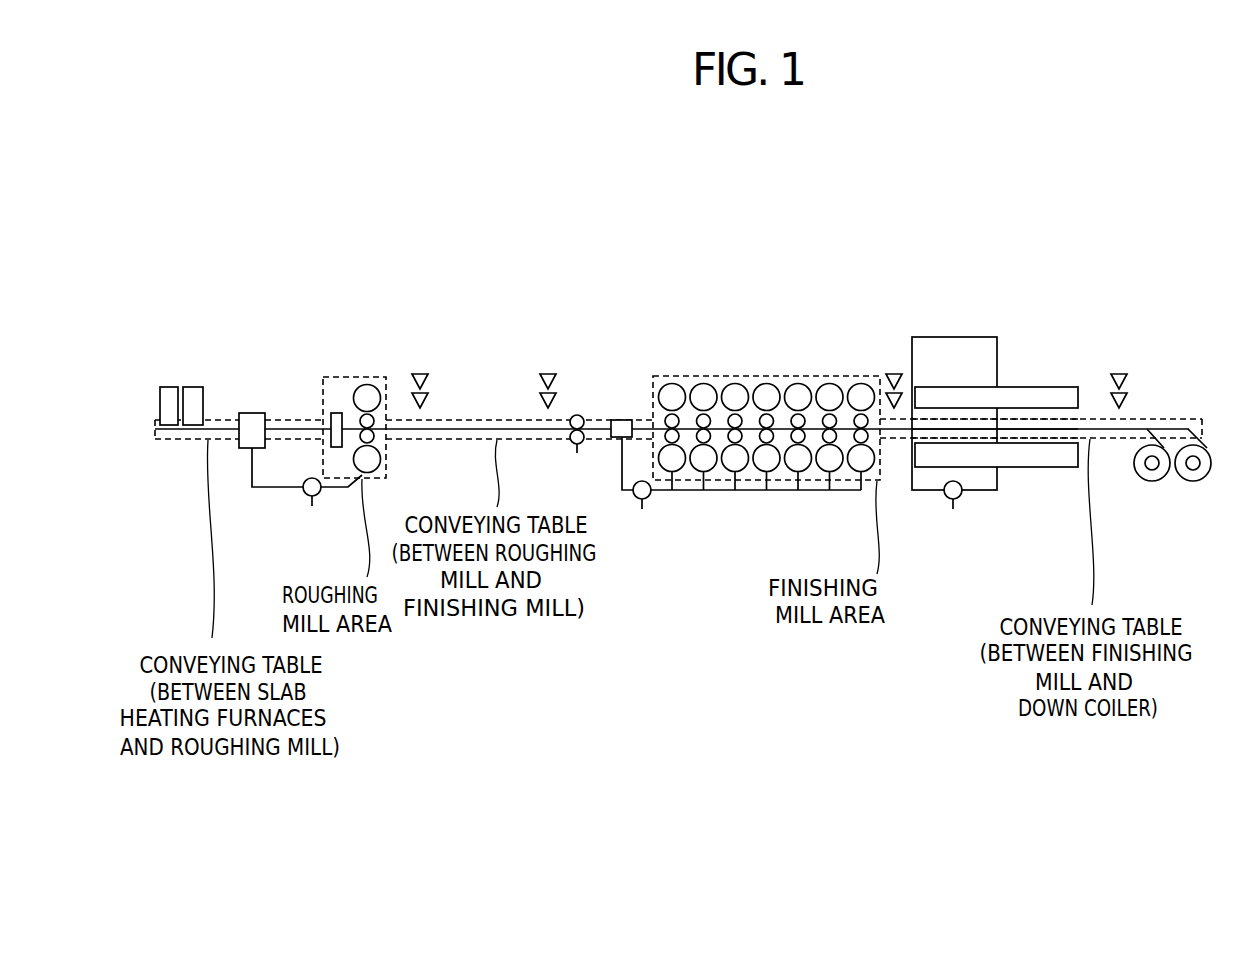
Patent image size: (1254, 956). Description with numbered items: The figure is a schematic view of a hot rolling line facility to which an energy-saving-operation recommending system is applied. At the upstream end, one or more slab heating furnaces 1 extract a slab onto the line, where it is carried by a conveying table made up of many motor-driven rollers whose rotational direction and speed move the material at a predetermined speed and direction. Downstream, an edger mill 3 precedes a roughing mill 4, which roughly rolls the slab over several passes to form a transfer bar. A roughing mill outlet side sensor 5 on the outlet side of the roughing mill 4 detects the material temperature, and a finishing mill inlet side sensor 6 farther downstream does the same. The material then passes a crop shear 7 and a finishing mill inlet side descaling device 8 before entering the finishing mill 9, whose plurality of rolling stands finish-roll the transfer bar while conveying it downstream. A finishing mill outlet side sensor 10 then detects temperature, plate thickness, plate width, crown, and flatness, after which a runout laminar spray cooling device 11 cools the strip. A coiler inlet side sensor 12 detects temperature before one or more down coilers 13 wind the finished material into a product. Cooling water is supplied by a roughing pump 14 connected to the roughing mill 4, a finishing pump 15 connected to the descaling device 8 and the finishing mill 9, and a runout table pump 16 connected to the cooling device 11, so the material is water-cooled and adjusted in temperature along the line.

The slab heating furnace 1 is at (170, 387).
The edger mill 3 is at (336, 413).
The roughing mill 4 is at (367, 384).
The roughing mill outlet side sensor 5 is at (421, 373).
The finishing mill inlet side sensor 6 is at (548, 373).
The crop shear 7 is at (577, 414).
The finishing mill inlet side descaling device 8 is at (622, 419).
The finishing mill 9 is at (878, 367).
The finishing mill outlet side sensor 10 is at (894, 373).
The runout laminar spray cooling device 11 is at (1025, 387).
The coiler inlet side sensor 12 is at (1119, 373).
The down coiler 13 is at (1149, 482).
The roughing pump 14 is at (310, 497).
The finishing pump 15 is at (640, 500).
The runout table pump 16 is at (951, 500).